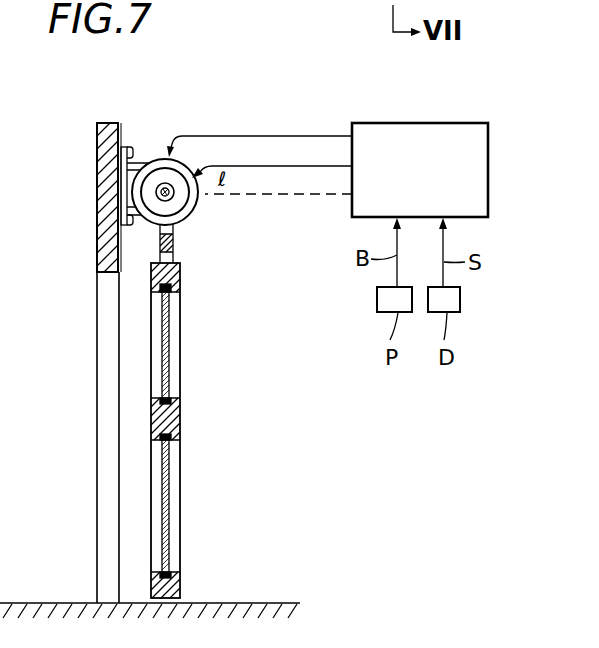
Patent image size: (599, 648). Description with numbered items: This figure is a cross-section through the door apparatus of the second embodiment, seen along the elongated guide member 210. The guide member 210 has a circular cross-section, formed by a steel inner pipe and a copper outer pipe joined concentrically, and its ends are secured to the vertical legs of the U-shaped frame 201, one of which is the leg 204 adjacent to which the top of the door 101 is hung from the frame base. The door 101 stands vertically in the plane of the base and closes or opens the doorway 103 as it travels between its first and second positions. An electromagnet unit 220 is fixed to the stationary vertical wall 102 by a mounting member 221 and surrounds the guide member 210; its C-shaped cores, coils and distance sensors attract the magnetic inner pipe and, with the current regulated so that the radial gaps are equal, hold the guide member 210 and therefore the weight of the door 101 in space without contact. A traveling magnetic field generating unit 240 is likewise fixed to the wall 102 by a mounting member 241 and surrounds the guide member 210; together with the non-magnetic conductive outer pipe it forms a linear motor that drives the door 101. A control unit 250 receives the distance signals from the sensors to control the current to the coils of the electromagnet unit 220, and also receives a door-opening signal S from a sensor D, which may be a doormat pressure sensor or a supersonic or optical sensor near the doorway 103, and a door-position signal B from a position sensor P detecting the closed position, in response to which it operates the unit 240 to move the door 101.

The door 101 is at (183, 420).
The vertical wall 102 is at (97, 140).
The doorway 103 is at (107, 273).
The U-shaped frame 201 is at (177, 243).
The vertical leg 204 is at (176, 232).
The elongated guide member 210 is at (160, 193).
The electromagnet unit 220 is at (197, 203).
The mounting member 221 is at (122, 227).
The traveling magnetic field generating unit 240 is at (191, 162).
The mounting member 241 is at (123, 147).
The control unit 250 is at (488, 170).